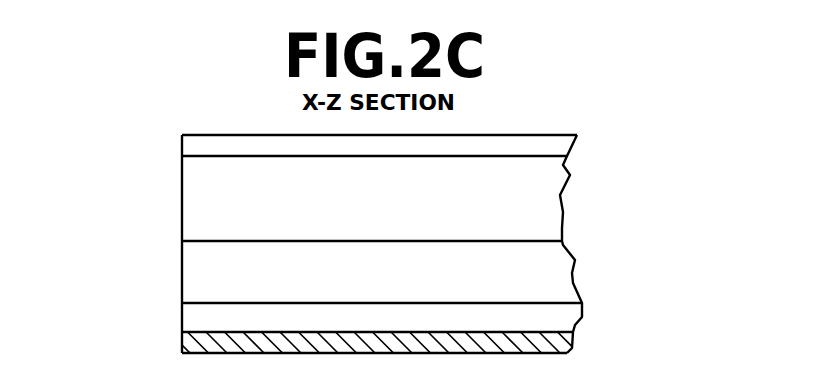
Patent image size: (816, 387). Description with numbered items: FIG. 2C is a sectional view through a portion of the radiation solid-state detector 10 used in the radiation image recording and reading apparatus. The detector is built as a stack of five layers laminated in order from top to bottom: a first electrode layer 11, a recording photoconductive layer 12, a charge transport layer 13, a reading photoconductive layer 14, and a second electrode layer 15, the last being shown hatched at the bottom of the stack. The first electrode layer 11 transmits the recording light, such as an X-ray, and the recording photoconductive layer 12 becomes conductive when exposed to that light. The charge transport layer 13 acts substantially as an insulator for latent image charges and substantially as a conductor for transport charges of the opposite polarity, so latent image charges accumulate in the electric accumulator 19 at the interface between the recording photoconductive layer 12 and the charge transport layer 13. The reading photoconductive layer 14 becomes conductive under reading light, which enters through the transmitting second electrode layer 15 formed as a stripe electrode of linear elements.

The radiation solid-state detector 10 is at (112, 178).
The first electrode layer 11 is at (182, 145).
The recording photoconductive layer 12 is at (182, 180).
The electric accumulator 19 is at (250, 237).
The charge transport layer 13 is at (182, 270).
The reading photoconductive layer 14 is at (182, 315).
The second electrode layer 15 is at (182, 342).